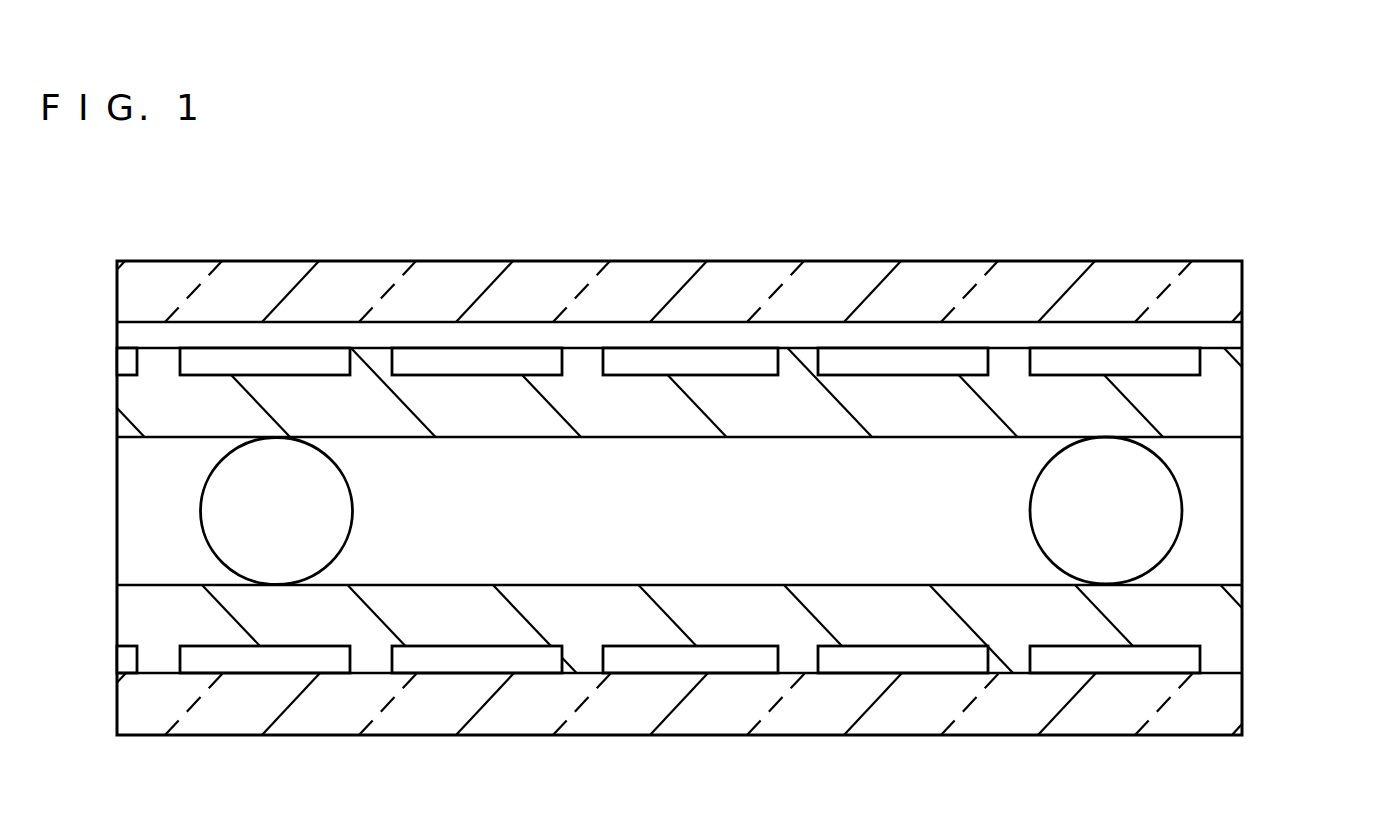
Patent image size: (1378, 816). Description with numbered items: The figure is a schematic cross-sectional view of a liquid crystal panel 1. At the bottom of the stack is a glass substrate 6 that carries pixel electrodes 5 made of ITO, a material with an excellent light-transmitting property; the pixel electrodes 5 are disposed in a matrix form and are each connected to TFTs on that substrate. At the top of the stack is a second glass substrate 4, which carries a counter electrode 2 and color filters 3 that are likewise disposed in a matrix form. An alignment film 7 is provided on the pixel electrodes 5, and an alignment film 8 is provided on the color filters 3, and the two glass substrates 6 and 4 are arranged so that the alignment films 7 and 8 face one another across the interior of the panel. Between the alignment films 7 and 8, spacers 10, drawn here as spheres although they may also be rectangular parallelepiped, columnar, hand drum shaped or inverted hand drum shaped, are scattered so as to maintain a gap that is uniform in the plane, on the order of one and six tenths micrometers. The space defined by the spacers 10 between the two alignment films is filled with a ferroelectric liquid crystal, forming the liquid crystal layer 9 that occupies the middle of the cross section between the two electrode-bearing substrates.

The liquid crystal panel 1 is at (995, 232).
The counter electrode 2 is at (1235, 335).
The color filters 3 is at (1192, 363).
The glass substrate 4 is at (1230, 271).
The pixel electrodes 5 is at (1192, 660).
The glass substrate 6 is at (1228, 707).
The alignment film 7 is at (1228, 603).
The alignment film 8 is at (1230, 410).
The liquid crystal layer 9 is at (1227, 463).
The spacers 10 is at (1172, 507).